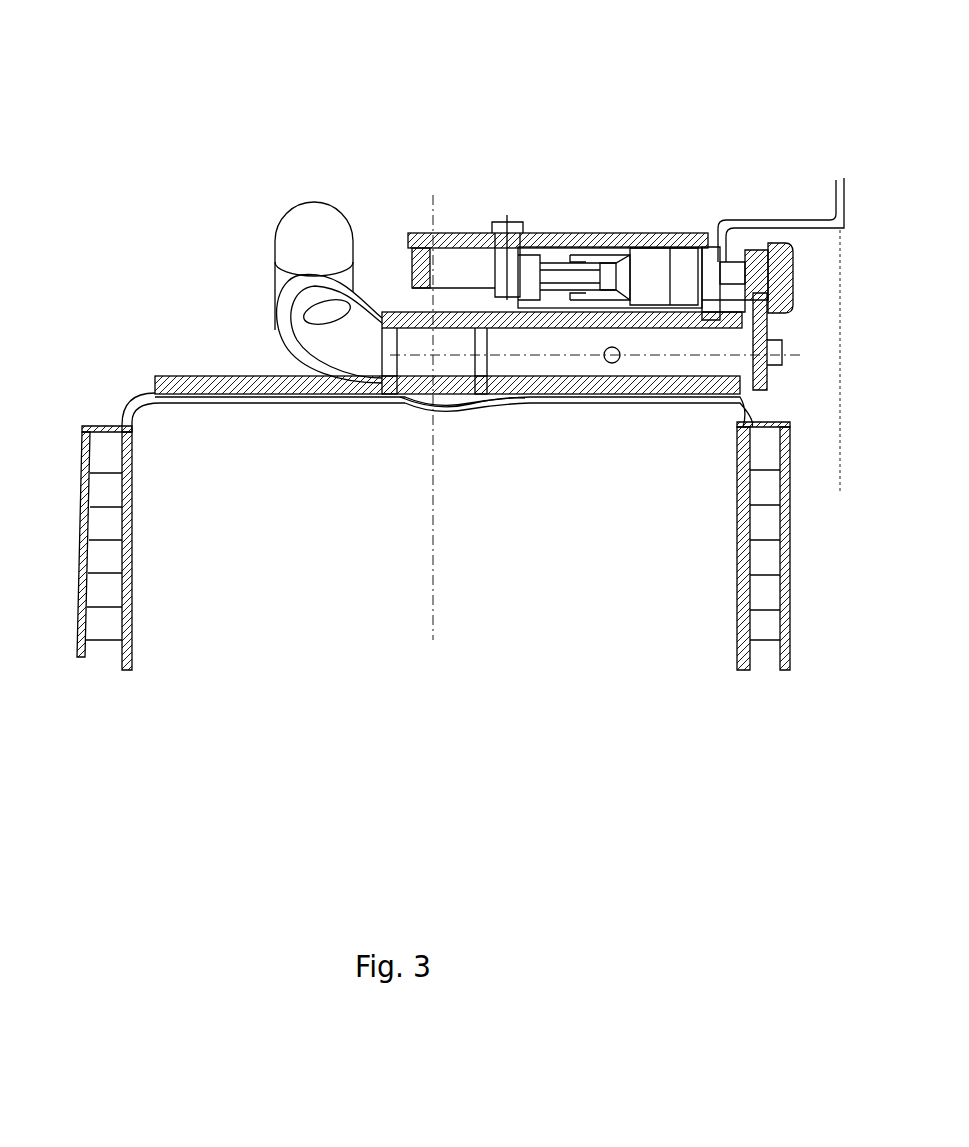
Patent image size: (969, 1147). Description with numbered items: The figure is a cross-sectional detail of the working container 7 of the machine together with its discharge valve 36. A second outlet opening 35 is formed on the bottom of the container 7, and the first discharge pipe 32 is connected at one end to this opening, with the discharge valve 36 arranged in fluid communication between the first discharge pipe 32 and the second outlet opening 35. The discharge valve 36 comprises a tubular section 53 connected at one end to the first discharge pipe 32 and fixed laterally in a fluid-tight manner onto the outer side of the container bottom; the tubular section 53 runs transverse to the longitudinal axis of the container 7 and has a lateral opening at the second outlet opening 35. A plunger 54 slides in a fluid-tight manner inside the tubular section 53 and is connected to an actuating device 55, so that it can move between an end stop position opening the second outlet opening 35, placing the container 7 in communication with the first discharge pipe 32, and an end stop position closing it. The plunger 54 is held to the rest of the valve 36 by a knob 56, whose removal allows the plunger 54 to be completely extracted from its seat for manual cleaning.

The container 7 is at (422, 603).
The first discharge pipe 32 is at (302, 237).
The second outlet opening 35 is at (436, 393).
The discharge valve 36 is at (655, 232).
The tubular section 53 is at (651, 388).
The plunger 54 is at (572, 368).
The actuating device 55 is at (672, 268).
The knob 56 is at (790, 258).